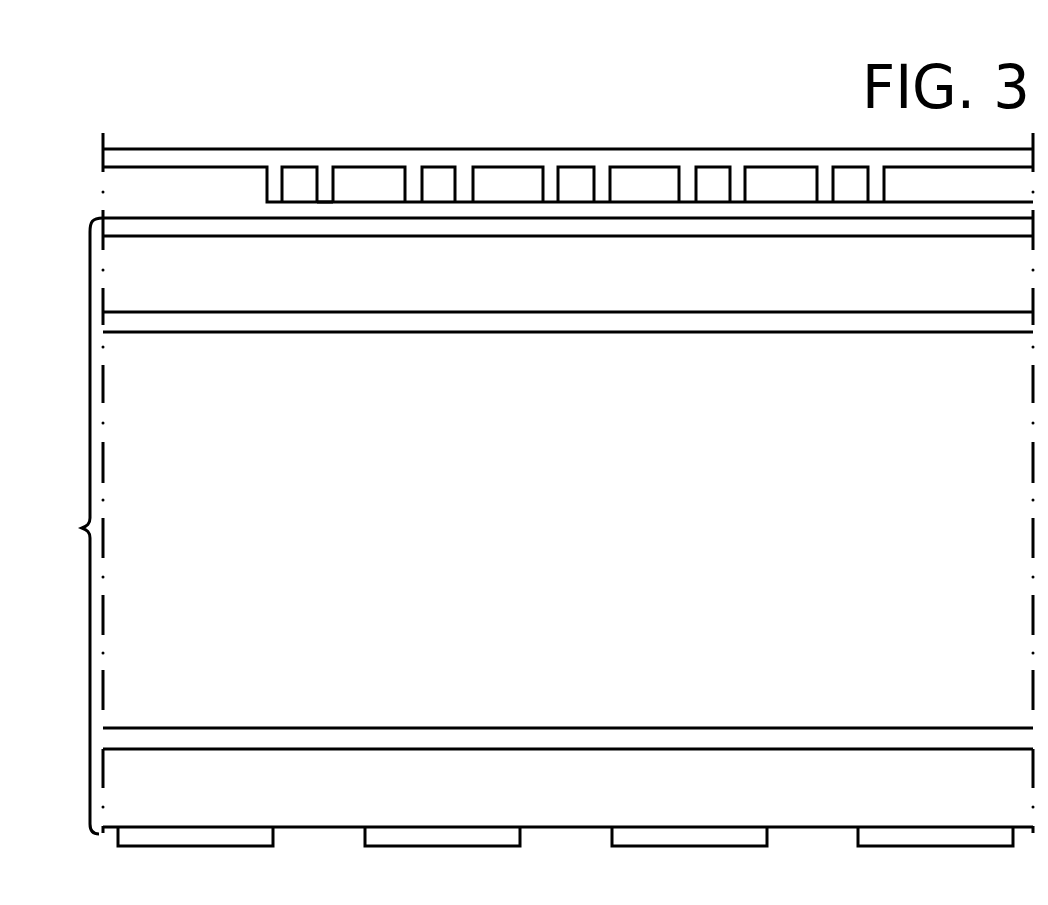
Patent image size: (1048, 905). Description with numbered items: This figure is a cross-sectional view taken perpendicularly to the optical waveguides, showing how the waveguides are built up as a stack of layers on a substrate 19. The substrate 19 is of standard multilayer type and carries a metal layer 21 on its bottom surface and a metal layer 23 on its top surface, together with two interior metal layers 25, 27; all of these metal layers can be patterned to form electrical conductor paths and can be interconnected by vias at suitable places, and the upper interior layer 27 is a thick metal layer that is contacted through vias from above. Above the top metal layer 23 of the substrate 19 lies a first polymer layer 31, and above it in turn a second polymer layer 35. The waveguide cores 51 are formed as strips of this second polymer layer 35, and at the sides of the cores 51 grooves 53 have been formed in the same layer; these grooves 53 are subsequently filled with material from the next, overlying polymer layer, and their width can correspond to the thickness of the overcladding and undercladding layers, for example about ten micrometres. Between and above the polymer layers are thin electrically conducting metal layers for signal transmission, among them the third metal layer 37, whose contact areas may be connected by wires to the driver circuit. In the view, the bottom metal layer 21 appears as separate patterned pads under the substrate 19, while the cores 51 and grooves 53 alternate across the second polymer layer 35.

The substrate 19 is at (69, 526).
The bottom metal layer 21 is at (115, 843).
The top metal layer of substrate 23 is at (108, 231).
The interior metal layer 25 is at (108, 735).
The top interior thick metal layer 27 is at (108, 318).
The first polymer layer 31 is at (108, 207).
The second polymer layer 35 is at (104, 188).
The third metal layer 37 is at (100, 152).
The waveguide core 51 is at (302, 170).
The groove 53 is at (325, 171).